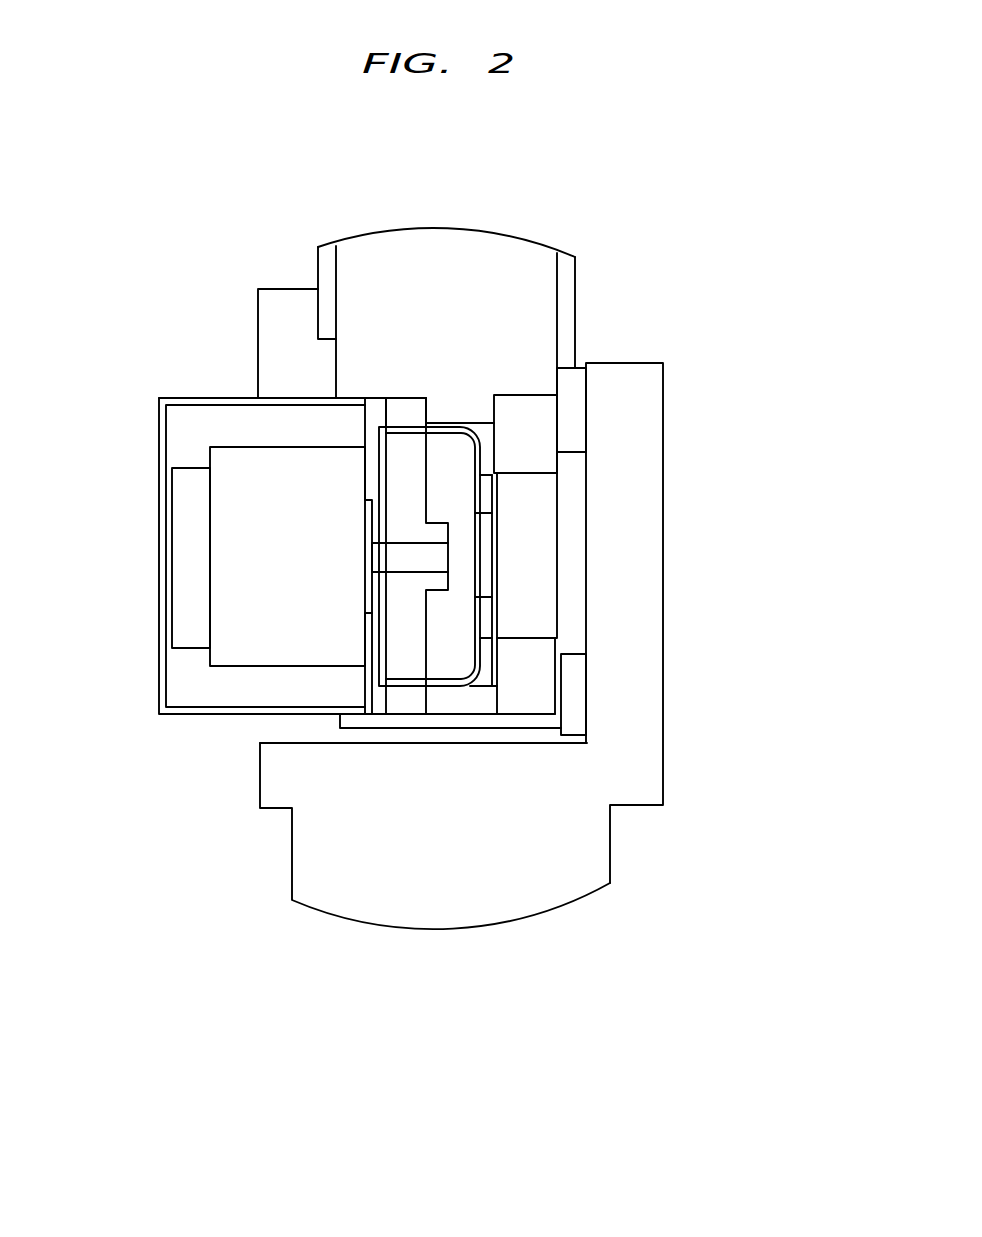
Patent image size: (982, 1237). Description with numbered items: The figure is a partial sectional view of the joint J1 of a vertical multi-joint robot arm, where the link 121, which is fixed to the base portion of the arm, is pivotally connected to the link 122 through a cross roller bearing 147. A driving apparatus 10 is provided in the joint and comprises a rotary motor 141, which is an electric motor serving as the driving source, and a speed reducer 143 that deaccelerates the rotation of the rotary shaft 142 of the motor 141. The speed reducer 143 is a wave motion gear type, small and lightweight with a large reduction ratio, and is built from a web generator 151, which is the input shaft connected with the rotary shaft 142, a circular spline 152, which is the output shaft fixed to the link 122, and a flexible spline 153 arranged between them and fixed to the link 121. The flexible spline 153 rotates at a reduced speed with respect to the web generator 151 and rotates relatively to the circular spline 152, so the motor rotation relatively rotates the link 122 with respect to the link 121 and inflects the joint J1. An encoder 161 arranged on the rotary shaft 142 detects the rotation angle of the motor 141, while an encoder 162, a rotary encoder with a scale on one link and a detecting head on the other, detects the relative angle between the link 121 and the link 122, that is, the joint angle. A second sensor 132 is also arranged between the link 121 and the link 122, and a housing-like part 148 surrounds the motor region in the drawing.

The driving apparatus 10 is at (303, 545).
The link 121 is at (435, 880).
The link 122 is at (445, 263).
The second sensor 132 is at (548, 572).
The rotary motor 141 is at (240, 595).
The rotary shaft 142 is at (380, 558).
The speed reducer 143 is at (487, 432).
The cross roller bearing 147 is at (540, 679).
The housing 148 is at (162, 690).
The web generator 151 is at (403, 468).
The circular spline 152 is at (406, 405).
The flexible spline 153 is at (442, 432).
The encoder 161 is at (185, 538).
The encoder 162 is at (577, 417).
The joint J1 is at (687, 555).